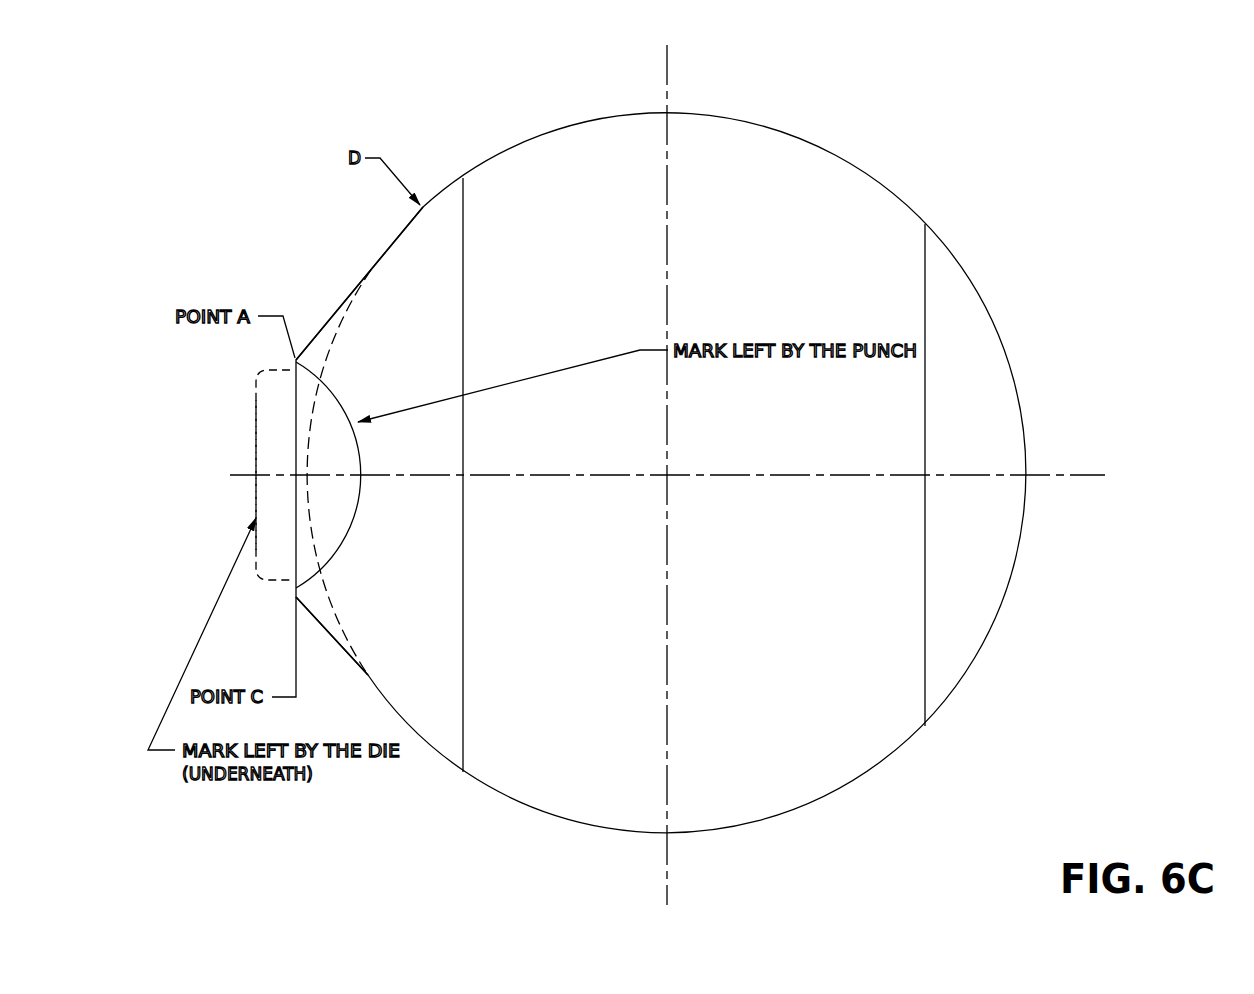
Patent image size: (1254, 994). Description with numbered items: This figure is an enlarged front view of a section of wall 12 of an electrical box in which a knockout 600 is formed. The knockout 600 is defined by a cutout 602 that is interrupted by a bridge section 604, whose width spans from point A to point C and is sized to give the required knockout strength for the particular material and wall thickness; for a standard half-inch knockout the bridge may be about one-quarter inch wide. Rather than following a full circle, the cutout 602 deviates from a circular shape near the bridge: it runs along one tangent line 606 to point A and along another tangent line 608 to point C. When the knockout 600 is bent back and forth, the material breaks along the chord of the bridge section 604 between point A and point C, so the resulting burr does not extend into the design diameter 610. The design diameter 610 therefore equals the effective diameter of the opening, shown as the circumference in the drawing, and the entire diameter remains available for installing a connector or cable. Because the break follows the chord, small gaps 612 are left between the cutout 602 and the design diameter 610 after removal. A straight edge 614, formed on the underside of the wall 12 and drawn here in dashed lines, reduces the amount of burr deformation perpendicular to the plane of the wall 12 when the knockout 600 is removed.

The wall 12 is at (223, 134).
The knockout 600 is at (797, 148).
The cutout 602 is at (920, 207).
The bridge section 604 is at (270, 456).
The tangent line 606 is at (345, 293).
The tangent line 608 is at (320, 612).
The design diameter 610 is at (353, 640).
The gaps 612 is at (318, 348).
The straight edge 614 is at (255, 485).